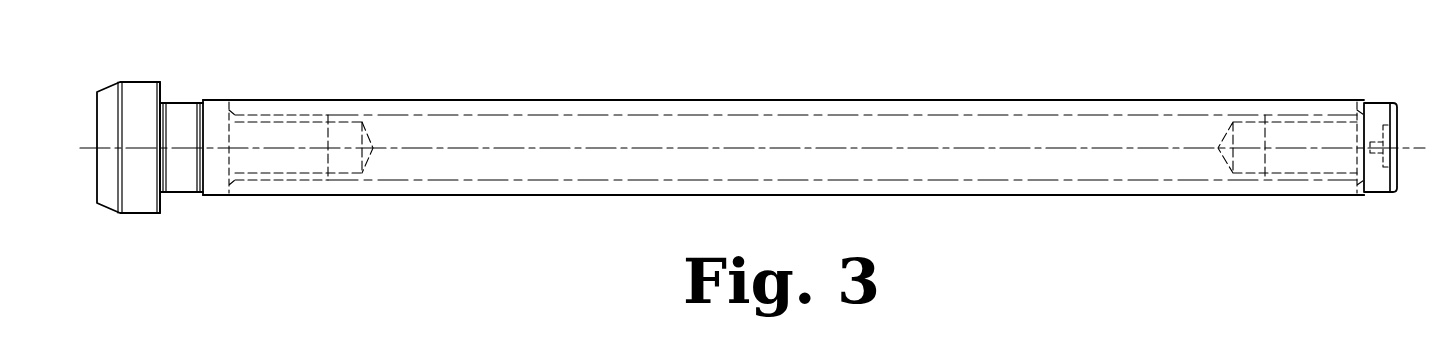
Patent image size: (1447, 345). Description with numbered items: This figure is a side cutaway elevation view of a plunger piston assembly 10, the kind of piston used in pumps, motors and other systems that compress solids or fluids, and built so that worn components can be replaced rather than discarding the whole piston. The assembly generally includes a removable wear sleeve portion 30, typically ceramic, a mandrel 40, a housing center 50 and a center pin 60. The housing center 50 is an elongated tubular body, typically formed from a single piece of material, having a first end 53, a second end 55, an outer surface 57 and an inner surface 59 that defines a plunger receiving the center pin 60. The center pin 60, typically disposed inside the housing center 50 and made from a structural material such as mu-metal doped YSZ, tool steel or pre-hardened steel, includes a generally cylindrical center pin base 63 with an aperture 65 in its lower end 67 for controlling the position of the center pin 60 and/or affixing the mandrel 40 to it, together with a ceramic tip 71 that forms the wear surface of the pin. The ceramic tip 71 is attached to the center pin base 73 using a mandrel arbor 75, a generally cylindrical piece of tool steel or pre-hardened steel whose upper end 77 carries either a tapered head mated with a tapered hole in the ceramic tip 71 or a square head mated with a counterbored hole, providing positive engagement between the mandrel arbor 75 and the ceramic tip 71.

The plunger piston assembly 10 is at (378, 241).
The removable wear sleeve portion 30 is at (578, 195).
The mandrel 40 is at (83, 127).
The housing center 50 is at (183, 193).
The first end 53 is at (169, 194).
The second end 55 is at (1327, 195).
The outer surface 57 is at (202, 200).
The inner surface 59 is at (190, 167).
The center pin 60 is at (745, 115).
The center pin base 63 is at (235, 132).
The aperture 65 is at (230, 155).
The lower end 67 is at (267, 115).
The ceramic tip 71 is at (370, 138).
The center pin base 73 is at (213, 135).
The mandrel arbor 75 is at (1378, 182).
The upper end 77 is at (1383, 128).